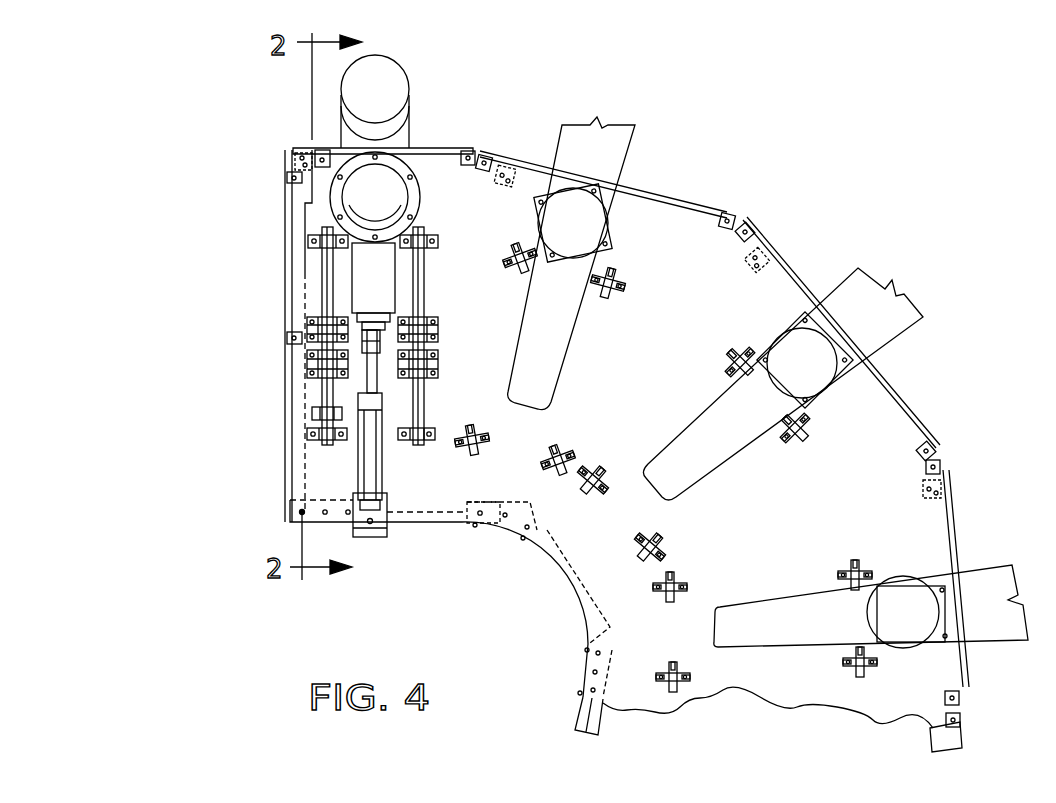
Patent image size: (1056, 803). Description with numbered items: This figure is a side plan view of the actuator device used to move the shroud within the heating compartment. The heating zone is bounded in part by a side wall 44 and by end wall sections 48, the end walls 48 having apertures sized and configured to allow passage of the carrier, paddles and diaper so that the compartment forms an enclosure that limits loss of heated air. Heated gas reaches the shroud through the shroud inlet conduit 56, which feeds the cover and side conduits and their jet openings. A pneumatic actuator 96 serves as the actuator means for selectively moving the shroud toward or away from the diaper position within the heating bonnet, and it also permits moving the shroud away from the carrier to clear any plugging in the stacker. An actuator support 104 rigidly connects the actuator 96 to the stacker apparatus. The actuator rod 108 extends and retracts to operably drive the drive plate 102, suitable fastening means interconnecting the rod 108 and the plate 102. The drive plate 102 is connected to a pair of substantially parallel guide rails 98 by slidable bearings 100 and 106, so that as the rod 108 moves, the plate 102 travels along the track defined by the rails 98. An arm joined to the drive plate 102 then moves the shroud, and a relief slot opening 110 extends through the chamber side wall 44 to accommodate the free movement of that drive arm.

The side wall 44 is at (704, 301).
The end wall section 48 is at (287, 222).
The shroud inlet conduit 56 is at (410, 80).
The pneumatic actuator 96 is at (382, 468).
The guide rails 98 is at (322, 293).
The slidable bearings 100 is at (437, 365).
The drive plate 102 is at (435, 372).
The actuator support 104 is at (382, 538).
The slidable bearings 106 is at (420, 241).
The actuator rod 108 is at (358, 372).
The relief slot opening 110 is at (388, 275).